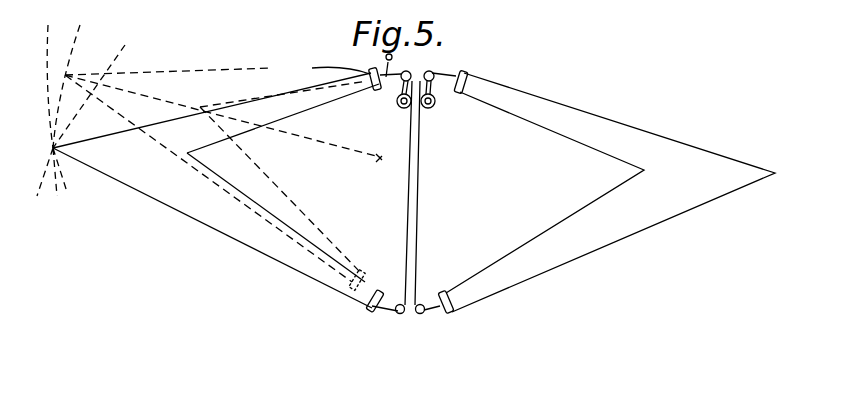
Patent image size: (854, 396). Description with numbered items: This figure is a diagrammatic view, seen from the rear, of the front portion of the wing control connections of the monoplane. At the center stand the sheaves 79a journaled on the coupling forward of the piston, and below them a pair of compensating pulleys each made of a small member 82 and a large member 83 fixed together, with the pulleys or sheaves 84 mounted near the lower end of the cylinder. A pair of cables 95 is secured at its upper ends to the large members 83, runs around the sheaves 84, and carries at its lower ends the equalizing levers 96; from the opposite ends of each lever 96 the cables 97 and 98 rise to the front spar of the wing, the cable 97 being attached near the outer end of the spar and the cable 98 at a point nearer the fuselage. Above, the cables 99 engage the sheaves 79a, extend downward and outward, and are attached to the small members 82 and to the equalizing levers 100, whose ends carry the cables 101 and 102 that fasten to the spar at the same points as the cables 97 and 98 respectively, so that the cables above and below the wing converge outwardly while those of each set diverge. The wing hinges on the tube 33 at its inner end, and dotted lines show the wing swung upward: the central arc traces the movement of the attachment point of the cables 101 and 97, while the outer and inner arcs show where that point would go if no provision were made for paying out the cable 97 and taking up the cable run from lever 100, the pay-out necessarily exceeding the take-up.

The tube 33 is at (378, 159).
The grooved pulleys or sheaves 79a is at (414, 72).
The small member of compensating pulley 82 is at (400, 108).
The large member of compensating pulley 83 is at (408, 108).
The pulleys or sheaves 84 is at (399, 316).
The cables 95 is at (420, 240).
The equalizing lever 96 is at (368, 306).
The cable 97 is at (566, 277).
The cable 98 is at (304, 238).
The cables 99 is at (388, 80).
The equalizing lever 100 is at (595, 87).
The cable 101 is at (194, 68).
The cable 102 is at (278, 185).